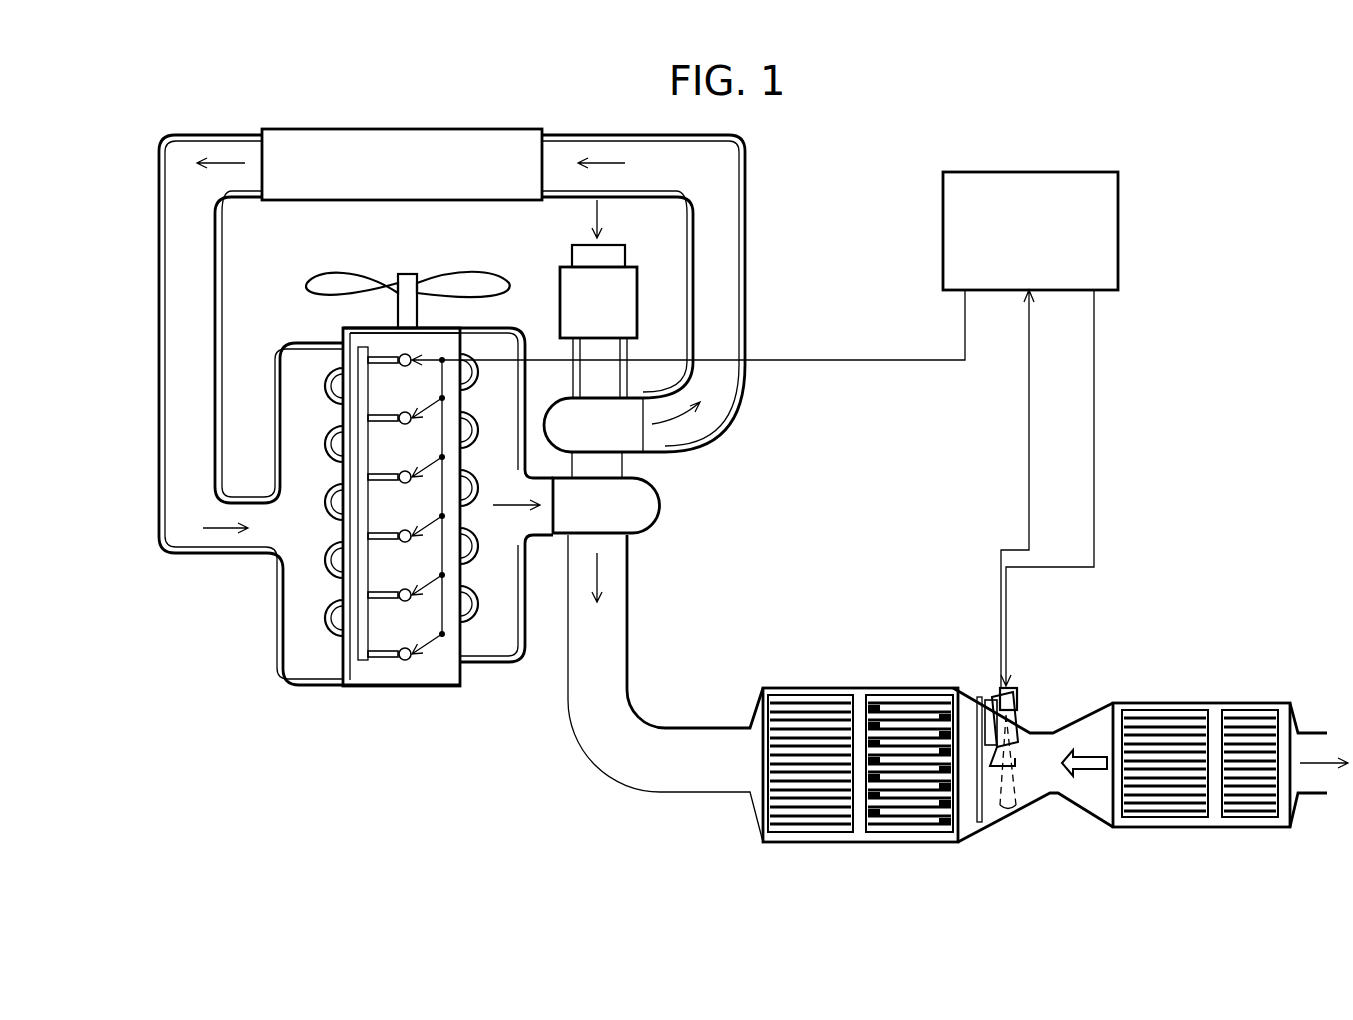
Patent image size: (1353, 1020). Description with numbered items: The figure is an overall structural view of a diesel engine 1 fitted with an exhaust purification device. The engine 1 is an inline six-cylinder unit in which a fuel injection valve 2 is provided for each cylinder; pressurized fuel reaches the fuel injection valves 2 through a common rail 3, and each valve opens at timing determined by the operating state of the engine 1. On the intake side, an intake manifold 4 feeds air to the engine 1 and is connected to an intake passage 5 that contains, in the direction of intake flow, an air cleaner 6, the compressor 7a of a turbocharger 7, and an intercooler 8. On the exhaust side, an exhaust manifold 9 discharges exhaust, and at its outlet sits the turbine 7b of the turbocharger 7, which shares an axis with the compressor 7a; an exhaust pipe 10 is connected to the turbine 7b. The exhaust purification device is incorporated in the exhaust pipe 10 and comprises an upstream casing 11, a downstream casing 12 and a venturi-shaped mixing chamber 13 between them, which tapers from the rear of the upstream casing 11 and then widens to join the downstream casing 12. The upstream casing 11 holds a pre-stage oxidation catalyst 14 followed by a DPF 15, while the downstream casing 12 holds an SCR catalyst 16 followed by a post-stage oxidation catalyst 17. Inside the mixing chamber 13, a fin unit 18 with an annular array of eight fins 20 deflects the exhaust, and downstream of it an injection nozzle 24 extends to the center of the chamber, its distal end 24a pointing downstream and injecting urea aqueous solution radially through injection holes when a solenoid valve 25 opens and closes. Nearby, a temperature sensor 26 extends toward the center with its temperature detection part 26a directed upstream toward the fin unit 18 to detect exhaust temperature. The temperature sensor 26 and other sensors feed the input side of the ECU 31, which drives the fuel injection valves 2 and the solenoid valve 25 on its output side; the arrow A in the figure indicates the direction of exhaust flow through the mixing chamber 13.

The engine 1 is at (232, 663).
The fuel injection valve 2 is at (405, 542).
The common rail 3 is at (358, 665).
The intake manifold 4 is at (276, 405).
The intake passage 5 is at (157, 280).
The air cleaner 6 is at (575, 288).
The turbocharger 7 is at (652, 469).
The compressor 7a is at (625, 430).
The turbine 7b is at (635, 507).
The intercooler 8 is at (318, 190).
The exhaust manifold 9 is at (495, 625).
The exhaust pipe 10 is at (617, 752).
The upstream casing 11 is at (860, 721).
The downstream casing 12 is at (1230, 725).
The mixing chamber 13 is at (1086, 718).
The pre-stage oxidation catalyst 14 is at (803, 700).
The DPF 15 is at (910, 710).
The SCR catalyst 16 is at (1167, 722).
The post-stage oxidation catalyst 17 is at (1250, 720).
The fin unit 18 is at (972, 833).
The fin 20 is at (995, 812).
The injection nozzle 24 is at (1005, 800).
The distal end 24a is at (1015, 768).
The solenoid valve 25 is at (1018, 700).
The temperature sensor 26 is at (1006, 693).
The temperature detection part 26a is at (987, 743).
The ECU 31 is at (1084, 170).
The exhaust gas flow direction A is at (1093, 776).